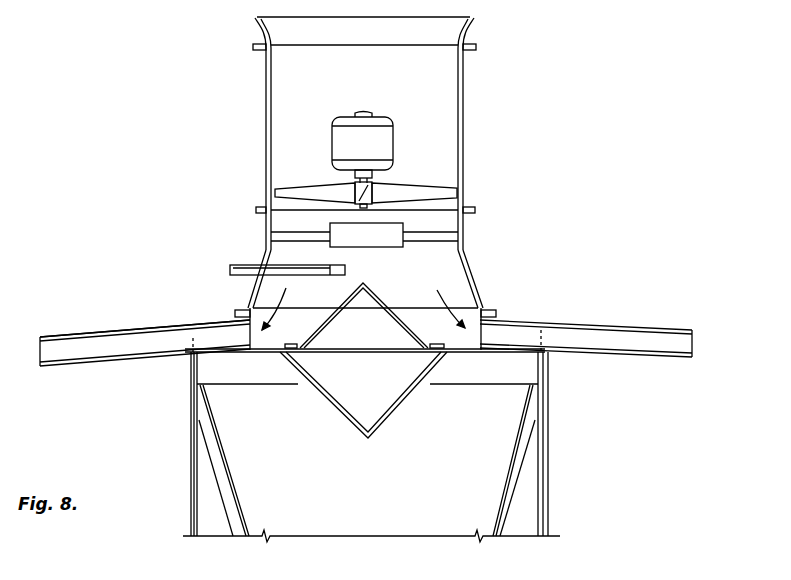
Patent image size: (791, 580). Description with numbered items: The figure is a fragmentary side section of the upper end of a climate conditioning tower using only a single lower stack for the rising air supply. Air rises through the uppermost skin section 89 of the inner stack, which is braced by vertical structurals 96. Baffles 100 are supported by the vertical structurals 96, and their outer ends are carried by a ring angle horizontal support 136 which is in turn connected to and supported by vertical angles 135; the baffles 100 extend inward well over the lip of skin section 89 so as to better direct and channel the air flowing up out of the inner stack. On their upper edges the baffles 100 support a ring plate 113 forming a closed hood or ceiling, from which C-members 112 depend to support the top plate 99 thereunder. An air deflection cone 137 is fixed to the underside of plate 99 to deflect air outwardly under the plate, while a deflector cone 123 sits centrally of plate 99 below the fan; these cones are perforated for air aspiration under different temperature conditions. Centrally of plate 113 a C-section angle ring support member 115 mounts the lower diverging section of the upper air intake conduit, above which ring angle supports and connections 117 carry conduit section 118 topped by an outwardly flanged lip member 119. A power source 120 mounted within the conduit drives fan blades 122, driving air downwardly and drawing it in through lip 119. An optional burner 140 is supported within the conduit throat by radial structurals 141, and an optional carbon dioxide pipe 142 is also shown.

The conduit section 118 is at (272, 91).
The outwardly flanged lip member 119 is at (262, 26).
The power source 120 is at (385, 140).
The fan blades 122 is at (404, 192).
The ring angle supports and connections 117 is at (256, 210).
The radial structurals 141 is at (450, 233).
The burner 140 is at (390, 238).
The CO2 pipe 142 is at (246, 266).
The deflector cone 123 is at (373, 300).
The C-section angle ring support member 115 is at (244, 313).
The top cap or plate 99 is at (270, 352).
The C-shaped angle support members 112 is at (92, 331).
The ring plate 113 is at (154, 324).
The baffles 100 is at (212, 366).
The ring angle horizontal support 136 is at (191, 386).
The vertical angles 135 is at (191, 440).
The air deflection cone 137 is at (406, 406).
The stack skin section 89 is at (232, 480).
The vertical structurals 96 is at (238, 511).